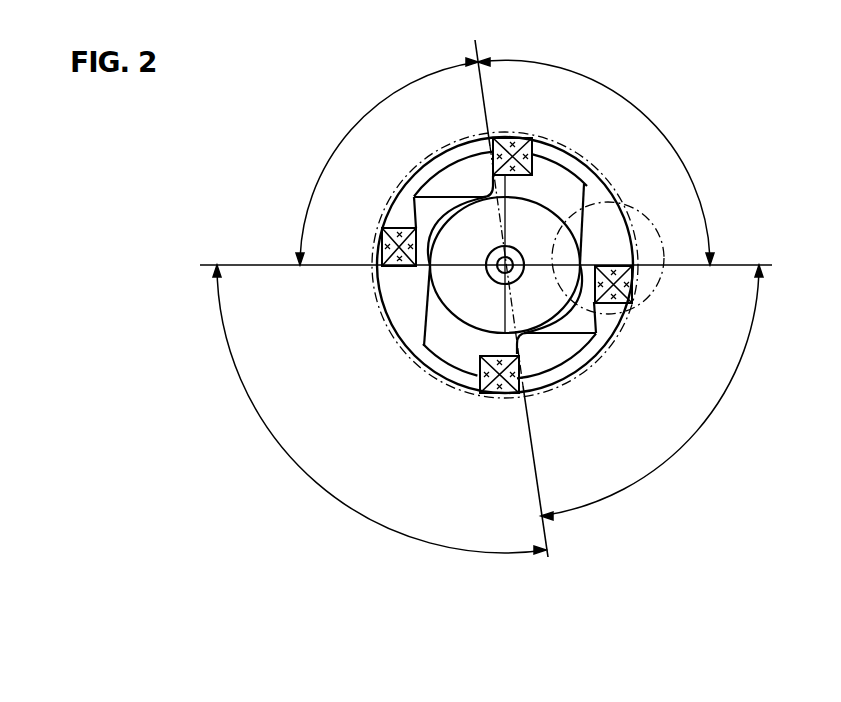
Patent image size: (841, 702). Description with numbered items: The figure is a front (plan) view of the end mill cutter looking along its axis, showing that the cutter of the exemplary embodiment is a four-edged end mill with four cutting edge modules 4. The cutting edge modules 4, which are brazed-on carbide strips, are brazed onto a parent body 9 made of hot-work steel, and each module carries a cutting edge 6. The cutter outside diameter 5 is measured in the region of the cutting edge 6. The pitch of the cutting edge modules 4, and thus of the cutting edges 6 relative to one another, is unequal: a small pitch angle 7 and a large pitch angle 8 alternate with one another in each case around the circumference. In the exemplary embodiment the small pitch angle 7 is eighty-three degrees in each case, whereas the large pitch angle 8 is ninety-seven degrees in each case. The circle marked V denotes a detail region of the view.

The cutting edge module 4 is at (519, 138).
The cutter outside diameter 5 is at (431, 374).
The cutting edge 6 is at (488, 156).
The small pitch angle 7 is at (346, 130).
The large pitch angle 8 is at (640, 107).
The parent body 9 is at (540, 308).
The detail view V is at (673, 318).